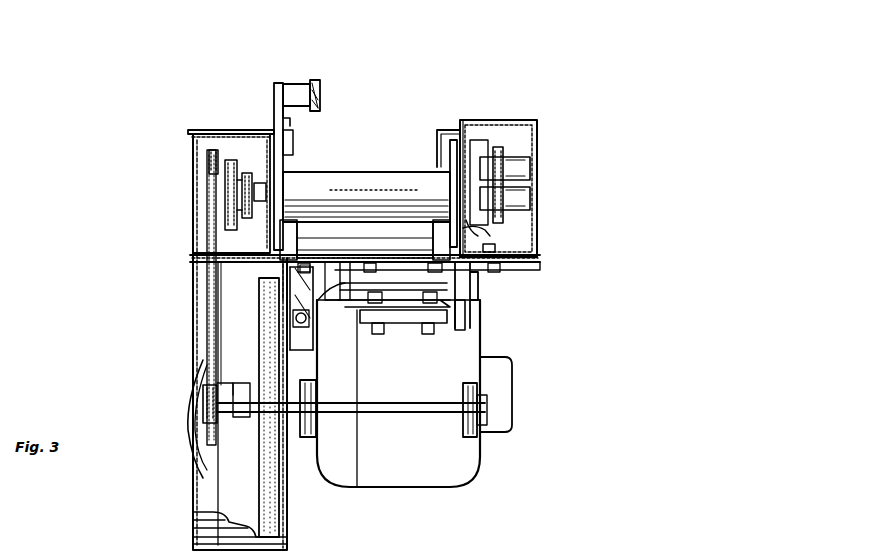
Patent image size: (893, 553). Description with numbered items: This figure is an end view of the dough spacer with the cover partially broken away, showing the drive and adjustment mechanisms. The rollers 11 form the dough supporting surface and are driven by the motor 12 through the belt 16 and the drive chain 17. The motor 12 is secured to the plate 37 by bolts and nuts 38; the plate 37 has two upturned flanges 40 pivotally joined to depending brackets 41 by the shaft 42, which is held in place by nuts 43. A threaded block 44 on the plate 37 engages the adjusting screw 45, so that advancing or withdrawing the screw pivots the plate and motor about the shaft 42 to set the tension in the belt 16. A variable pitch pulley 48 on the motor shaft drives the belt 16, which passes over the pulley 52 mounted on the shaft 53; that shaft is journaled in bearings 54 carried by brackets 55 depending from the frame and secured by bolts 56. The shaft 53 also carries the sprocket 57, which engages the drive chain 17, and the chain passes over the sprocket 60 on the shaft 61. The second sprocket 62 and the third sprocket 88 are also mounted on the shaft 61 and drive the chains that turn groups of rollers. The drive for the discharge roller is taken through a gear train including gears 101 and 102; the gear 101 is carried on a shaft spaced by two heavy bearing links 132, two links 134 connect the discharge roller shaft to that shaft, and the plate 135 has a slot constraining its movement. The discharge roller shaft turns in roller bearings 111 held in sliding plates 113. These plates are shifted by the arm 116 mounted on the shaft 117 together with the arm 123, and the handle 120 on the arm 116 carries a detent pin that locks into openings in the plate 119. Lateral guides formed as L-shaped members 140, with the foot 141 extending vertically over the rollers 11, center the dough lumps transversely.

The rollers 11 is at (371, 165).
The motor 12 is at (424, 470).
The belt 16 is at (268, 470).
The drive chain 17 is at (207, 338).
The plate 37 is at (408, 324).
The bolts and nuts 38 is at (378, 334).
The upturned flanges 40 is at (470, 300).
The depending brackets 41 is at (470, 293).
The shaft 42 is at (466, 318).
The nuts 43 is at (465, 283).
The threaded block 44 is at (305, 333).
The adjusting screw 45 is at (293, 318).
The variable pitch pulley 48 is at (243, 380).
The pulley 52 is at (259, 450).
The shaft 53 is at (392, 413).
The bearings 54 is at (307, 438).
The brackets 55 is at (470, 386).
The bolts 56 is at (496, 250).
The sprocket 57 is at (201, 440).
The sprocket 60 is at (212, 149).
The shaft 61 is at (257, 172).
The second sprocket 62 is at (230, 160).
The third sprocket 88 is at (247, 180).
The gear 101 is at (527, 154).
The gear 102 is at (531, 222).
The roller bearings 111 is at (266, 192).
The plates 113 is at (470, 212).
The arm 116 is at (284, 119).
The shaft 117 is at (352, 240).
The plate 119 is at (276, 86).
The handle 120 is at (315, 88).
The arm 123 is at (450, 182).
The bearing links 132 is at (533, 168).
The links 134 is at (533, 194).
The plate 135 is at (476, 156).
The L-shaped members 140 is at (212, 130).
The foot 141 is at (439, 141).